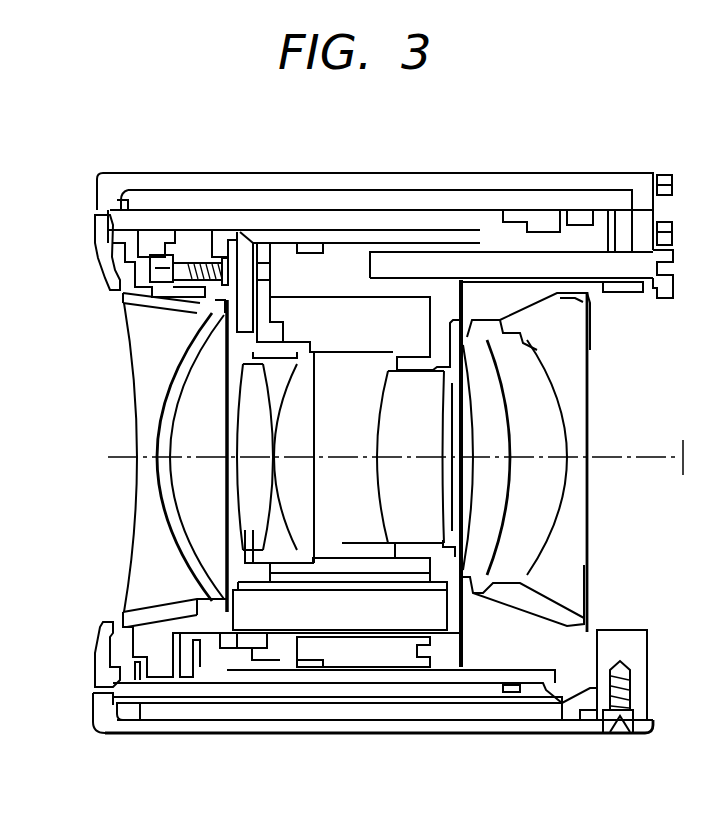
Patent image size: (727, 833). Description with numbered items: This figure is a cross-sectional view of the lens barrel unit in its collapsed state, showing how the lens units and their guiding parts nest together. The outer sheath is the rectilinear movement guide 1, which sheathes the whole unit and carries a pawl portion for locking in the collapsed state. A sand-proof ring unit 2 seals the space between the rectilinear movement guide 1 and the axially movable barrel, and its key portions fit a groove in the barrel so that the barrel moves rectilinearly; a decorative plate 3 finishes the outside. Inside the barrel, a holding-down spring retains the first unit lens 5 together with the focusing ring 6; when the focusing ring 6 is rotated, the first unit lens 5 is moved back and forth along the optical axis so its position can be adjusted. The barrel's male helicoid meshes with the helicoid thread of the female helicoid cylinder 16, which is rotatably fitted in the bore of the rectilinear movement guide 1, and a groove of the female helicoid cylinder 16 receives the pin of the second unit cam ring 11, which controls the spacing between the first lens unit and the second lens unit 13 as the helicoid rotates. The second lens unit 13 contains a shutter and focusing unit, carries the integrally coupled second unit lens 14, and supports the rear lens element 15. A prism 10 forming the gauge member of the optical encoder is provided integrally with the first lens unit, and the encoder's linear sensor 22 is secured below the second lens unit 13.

The rectilinear movement guide 1 is at (107, 192).
The sand-proof ring unit 2 is at (93, 705).
The decorative plate 3 is at (108, 640).
The first unit lens 5 is at (147, 522).
The focusing ring 6 is at (148, 265).
The prism 10 is at (432, 612).
The second unit cam ring 11 is at (343, 676).
The second lens unit 13 is at (343, 318).
The second unit lens 14 is at (364, 428).
The rear lens 15 is at (573, 365).
The female helicoid cylinder 16 is at (382, 190).
The linear sensor 22 is at (227, 652).